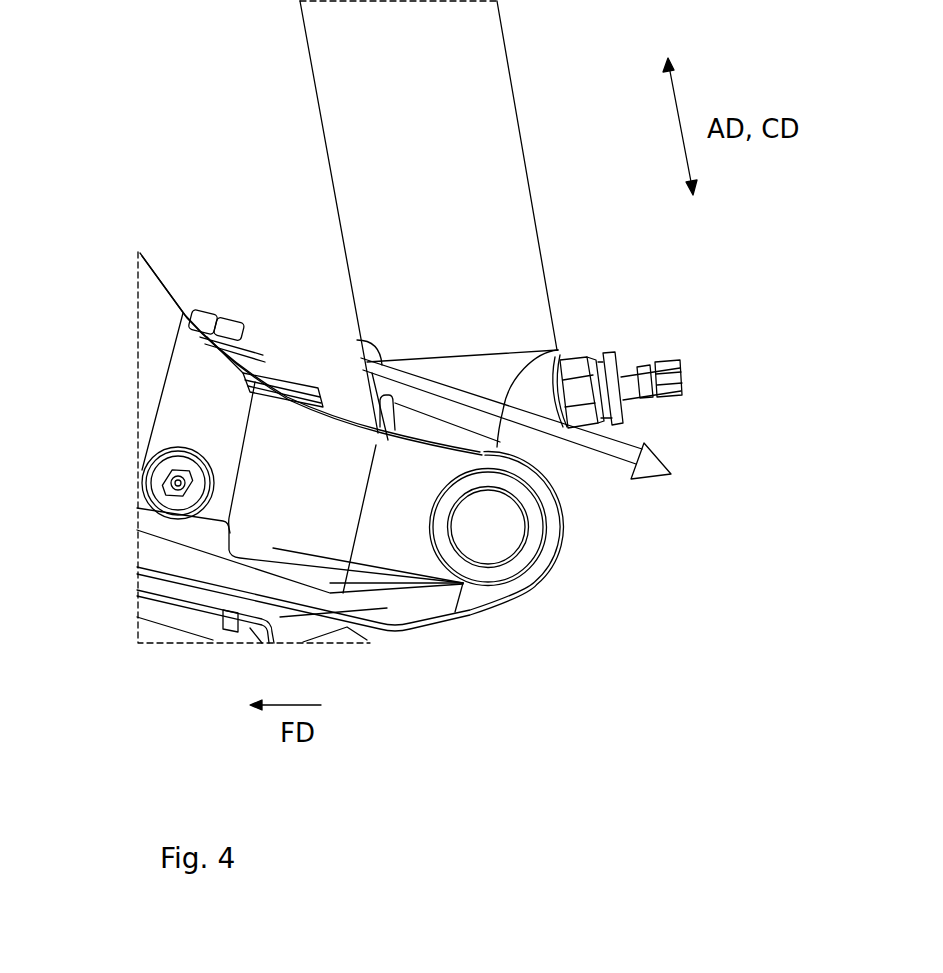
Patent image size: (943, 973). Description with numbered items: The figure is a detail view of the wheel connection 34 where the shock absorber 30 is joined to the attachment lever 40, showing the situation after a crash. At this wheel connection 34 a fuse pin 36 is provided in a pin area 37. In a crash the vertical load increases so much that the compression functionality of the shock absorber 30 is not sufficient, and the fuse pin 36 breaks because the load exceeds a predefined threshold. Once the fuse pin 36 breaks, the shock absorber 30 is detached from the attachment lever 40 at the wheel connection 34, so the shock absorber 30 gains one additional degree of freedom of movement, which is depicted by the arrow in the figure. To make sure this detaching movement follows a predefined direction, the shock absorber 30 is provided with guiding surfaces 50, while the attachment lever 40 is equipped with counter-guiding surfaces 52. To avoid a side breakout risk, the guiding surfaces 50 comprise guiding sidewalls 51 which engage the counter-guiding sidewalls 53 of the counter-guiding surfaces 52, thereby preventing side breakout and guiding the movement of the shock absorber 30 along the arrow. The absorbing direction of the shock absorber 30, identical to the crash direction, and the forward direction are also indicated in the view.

The shock absorber 30 is at (487, 107).
The wheel connection 34 is at (533, 461).
The fuse pin 36 is at (510, 533).
The pin area 37 is at (688, 312).
The attachment lever 40 is at (163, 375).
The guiding surfaces 50 is at (358, 340).
The guiding sidewalls 51 is at (363, 388).
The counter-guiding surfaces 52 is at (558, 350).
The counter-guiding sidewalls 53 is at (543, 580).